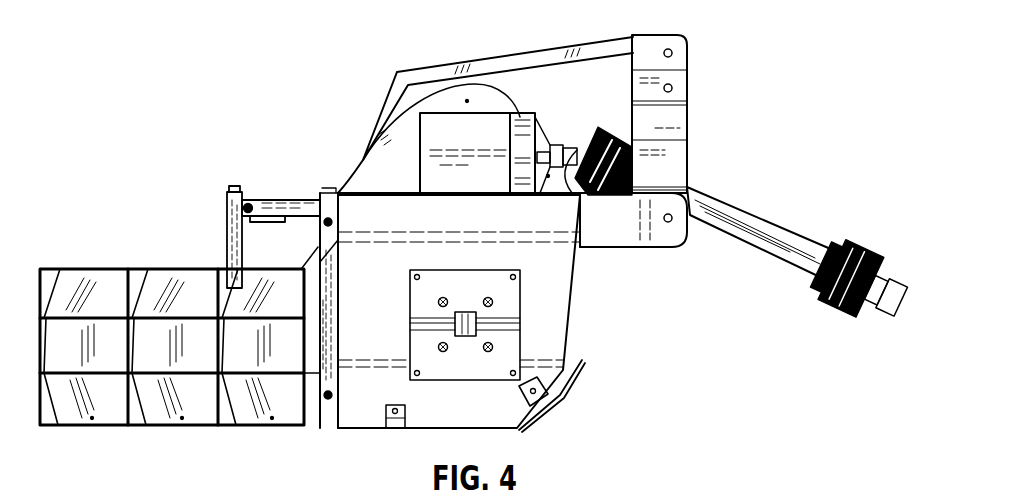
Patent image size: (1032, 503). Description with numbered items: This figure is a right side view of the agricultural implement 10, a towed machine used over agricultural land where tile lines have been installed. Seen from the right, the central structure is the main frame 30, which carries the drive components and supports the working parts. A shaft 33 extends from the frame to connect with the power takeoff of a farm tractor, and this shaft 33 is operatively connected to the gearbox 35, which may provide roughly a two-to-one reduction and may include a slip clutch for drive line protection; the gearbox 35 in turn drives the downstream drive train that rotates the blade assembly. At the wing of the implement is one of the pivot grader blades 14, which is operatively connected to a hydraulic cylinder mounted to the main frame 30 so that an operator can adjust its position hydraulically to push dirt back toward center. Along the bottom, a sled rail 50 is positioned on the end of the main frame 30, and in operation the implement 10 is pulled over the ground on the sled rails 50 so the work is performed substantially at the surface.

The agricultural implement 10 is at (178, 60).
The grader blade 14 is at (66, 268).
The main frame 30 is at (580, 285).
The shaft 33 is at (560, 143).
The gearbox 35 is at (498, 123).
The sled rail 50 is at (540, 410).